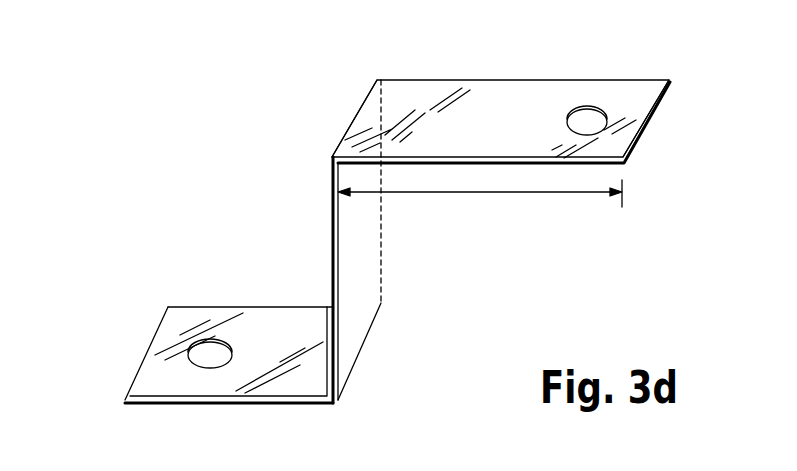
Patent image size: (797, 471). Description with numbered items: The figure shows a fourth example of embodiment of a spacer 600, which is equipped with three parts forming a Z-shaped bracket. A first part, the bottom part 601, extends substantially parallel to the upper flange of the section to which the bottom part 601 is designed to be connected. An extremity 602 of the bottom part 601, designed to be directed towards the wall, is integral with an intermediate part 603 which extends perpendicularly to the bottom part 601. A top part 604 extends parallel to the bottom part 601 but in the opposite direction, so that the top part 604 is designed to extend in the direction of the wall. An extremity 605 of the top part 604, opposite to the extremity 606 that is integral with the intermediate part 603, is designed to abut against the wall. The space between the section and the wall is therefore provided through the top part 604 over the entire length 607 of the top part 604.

The spacer 600 is at (613, 269).
The bottom part 601 is at (153, 380).
The extremity of the bottom part 602 is at (352, 368).
The intermediate part 603 is at (357, 277).
The top part 604 is at (520, 100).
The extremity of the top part 605 is at (661, 108).
The extremity of the top part integral with the intermediate part 606 is at (359, 110).
The length of the top part 607 is at (480, 204).